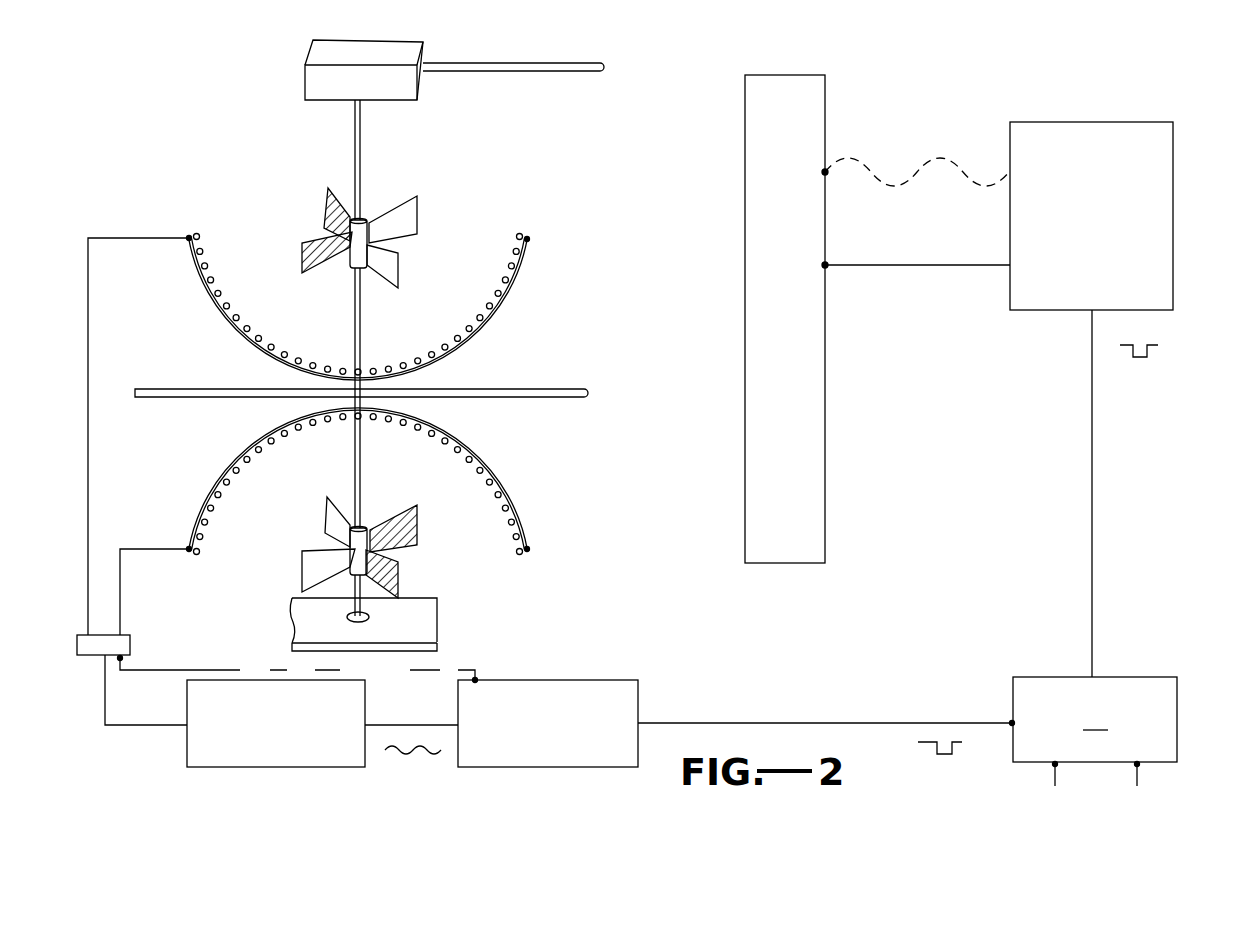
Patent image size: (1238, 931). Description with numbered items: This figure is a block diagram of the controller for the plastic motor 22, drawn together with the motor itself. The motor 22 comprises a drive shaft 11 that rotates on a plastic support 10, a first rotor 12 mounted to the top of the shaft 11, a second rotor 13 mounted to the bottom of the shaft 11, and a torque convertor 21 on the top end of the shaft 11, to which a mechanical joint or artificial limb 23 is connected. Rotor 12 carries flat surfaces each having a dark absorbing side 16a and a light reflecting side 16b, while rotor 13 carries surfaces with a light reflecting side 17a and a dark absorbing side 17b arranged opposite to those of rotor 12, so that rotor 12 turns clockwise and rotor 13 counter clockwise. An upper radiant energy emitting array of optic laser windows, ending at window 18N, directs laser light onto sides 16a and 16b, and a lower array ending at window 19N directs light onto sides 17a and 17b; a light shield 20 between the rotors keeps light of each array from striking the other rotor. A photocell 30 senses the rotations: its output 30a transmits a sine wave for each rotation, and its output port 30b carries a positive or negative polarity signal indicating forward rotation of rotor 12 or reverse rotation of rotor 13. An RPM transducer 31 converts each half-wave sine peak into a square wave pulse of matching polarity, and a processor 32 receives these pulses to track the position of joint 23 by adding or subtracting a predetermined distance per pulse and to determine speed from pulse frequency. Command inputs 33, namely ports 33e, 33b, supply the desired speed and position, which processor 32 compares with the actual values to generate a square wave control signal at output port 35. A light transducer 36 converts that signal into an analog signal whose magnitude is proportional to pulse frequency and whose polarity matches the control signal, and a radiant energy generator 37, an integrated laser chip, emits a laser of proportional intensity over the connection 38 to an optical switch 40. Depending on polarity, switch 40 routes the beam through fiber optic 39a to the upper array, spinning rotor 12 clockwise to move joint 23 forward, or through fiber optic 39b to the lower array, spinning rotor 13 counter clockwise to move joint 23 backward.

The plastic support 10 is at (390, 652).
The drive shaft member 11 is at (369, 616).
The first rotor 12 is at (434, 174).
The second rotor 13 is at (439, 521).
The dark radiant energy absorbing side 16a is at (325, 198).
The light radiant energy reflecting surface 16b is at (420, 222).
The light radiant energy reflecting surface 17a is at (323, 507).
The dark radiant energy absorbing side 17b is at (412, 505).
The optic laser emitting window 18N is at (189, 243).
The optic laser emitting window 19N is at (189, 545).
The light shield 20 is at (577, 398).
The torque convertor 21 is at (323, 93).
The motor 22 is at (229, 66).
The mechanical joint or artificial limb 23 is at (512, 68).
The photocell 30 is at (783, 565).
The photocell output 30a is at (828, 168).
The photocell output port 30b is at (828, 262).
The RPM transducer 31 is at (1035, 312).
The processor 32 is at (1095, 719).
The processor input ports 33 is at (1091, 733).
The output lead e 33e is at (1048, 767).
The processor input port 33b is at (1143, 767).
The processor output port 35 is at (1010, 720).
The light transducer 36 is at (540, 768).
The radiant energy generator 37 is at (273, 768).
The power line 38 is at (155, 727).
The fiber optic 39a is at (88, 452).
The fiber optic 39b is at (120, 580).
The optical switch 40 is at (130, 645).